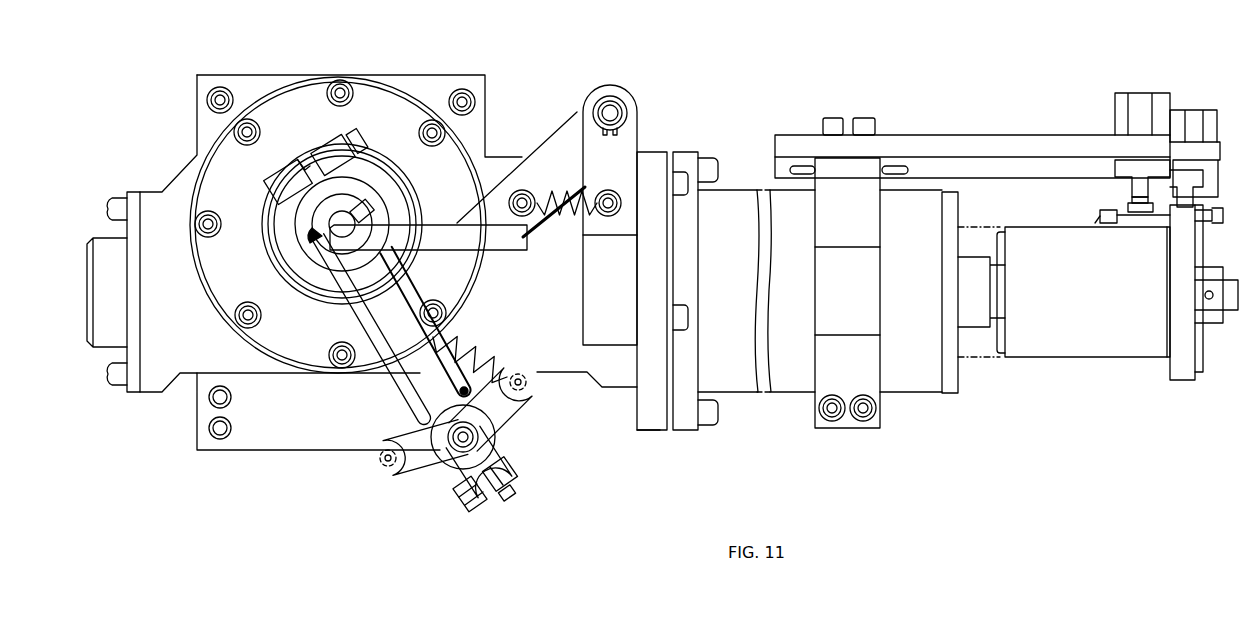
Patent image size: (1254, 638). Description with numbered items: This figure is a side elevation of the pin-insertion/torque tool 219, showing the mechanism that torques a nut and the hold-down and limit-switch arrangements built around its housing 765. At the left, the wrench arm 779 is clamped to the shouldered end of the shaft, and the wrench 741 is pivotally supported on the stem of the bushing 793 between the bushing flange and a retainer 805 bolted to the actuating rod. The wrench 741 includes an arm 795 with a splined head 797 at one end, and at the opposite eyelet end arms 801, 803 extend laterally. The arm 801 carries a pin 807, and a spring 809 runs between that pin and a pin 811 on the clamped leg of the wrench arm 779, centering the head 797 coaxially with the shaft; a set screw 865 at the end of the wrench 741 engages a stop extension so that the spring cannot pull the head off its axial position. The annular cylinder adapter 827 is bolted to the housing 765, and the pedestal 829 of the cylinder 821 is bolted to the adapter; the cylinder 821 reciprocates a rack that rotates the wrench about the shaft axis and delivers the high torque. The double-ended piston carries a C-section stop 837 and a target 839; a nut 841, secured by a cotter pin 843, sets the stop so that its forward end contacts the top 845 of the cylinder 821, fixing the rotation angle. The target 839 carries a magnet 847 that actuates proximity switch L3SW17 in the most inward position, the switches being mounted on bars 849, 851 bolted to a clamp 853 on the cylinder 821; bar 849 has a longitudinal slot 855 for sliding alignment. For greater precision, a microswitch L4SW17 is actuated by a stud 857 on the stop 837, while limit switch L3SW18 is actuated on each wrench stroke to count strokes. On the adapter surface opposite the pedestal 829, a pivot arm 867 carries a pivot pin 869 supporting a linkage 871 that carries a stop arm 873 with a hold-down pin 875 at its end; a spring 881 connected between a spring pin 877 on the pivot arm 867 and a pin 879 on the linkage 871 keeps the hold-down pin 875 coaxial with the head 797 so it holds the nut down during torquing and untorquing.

The pin-insertion/torque tool 219 is at (139, 483).
The wrench 741 is at (417, 357).
The housing 765 is at (187, 380).
The wrench arm 779 is at (370, 178).
The bushing 793 is at (363, 210).
The arm 795 is at (395, 305).
The splined head 797 is at (315, 250).
The arm 801 is at (512, 400).
The arm 803 is at (408, 460).
The retainer 805 is at (483, 440).
The pin 807 is at (530, 382).
The spring 809 is at (482, 342).
The pin 811 is at (446, 312).
The cylinder 821 is at (800, 377).
The cylinder adapter 827 is at (657, 420).
The pedestal 829 is at (683, 372).
The stop 837 is at (1073, 340).
The target 839 is at (1177, 380).
The nut 841 is at (1203, 360).
The cotter pin 843 is at (1203, 318).
The top of cylinder 845 is at (960, 387).
The magnet 847 is at (1208, 226).
The bar 849 is at (1008, 170).
The bar 851 is at (917, 140).
The clamp 853 is at (863, 360).
The longitudinal slot 855 is at (800, 168).
The stud 857 is at (1142, 223).
The set screw 865 is at (475, 507).
The pivot arm 867 is at (588, 328).
The pivot pin 869 is at (617, 113).
The linkage 871 is at (573, 122).
The stop arm 873 is at (515, 243).
The hold-down pin 875 is at (337, 220).
The spring pin 877 is at (607, 197).
The pin 879 is at (518, 200).
The spring 881 is at (573, 190).
The proximity switch L3SW17 is at (1127, 193).
The limit switch L3SW18 is at (1217, 190).
The microswitch L4SW17 is at (1097, 223).